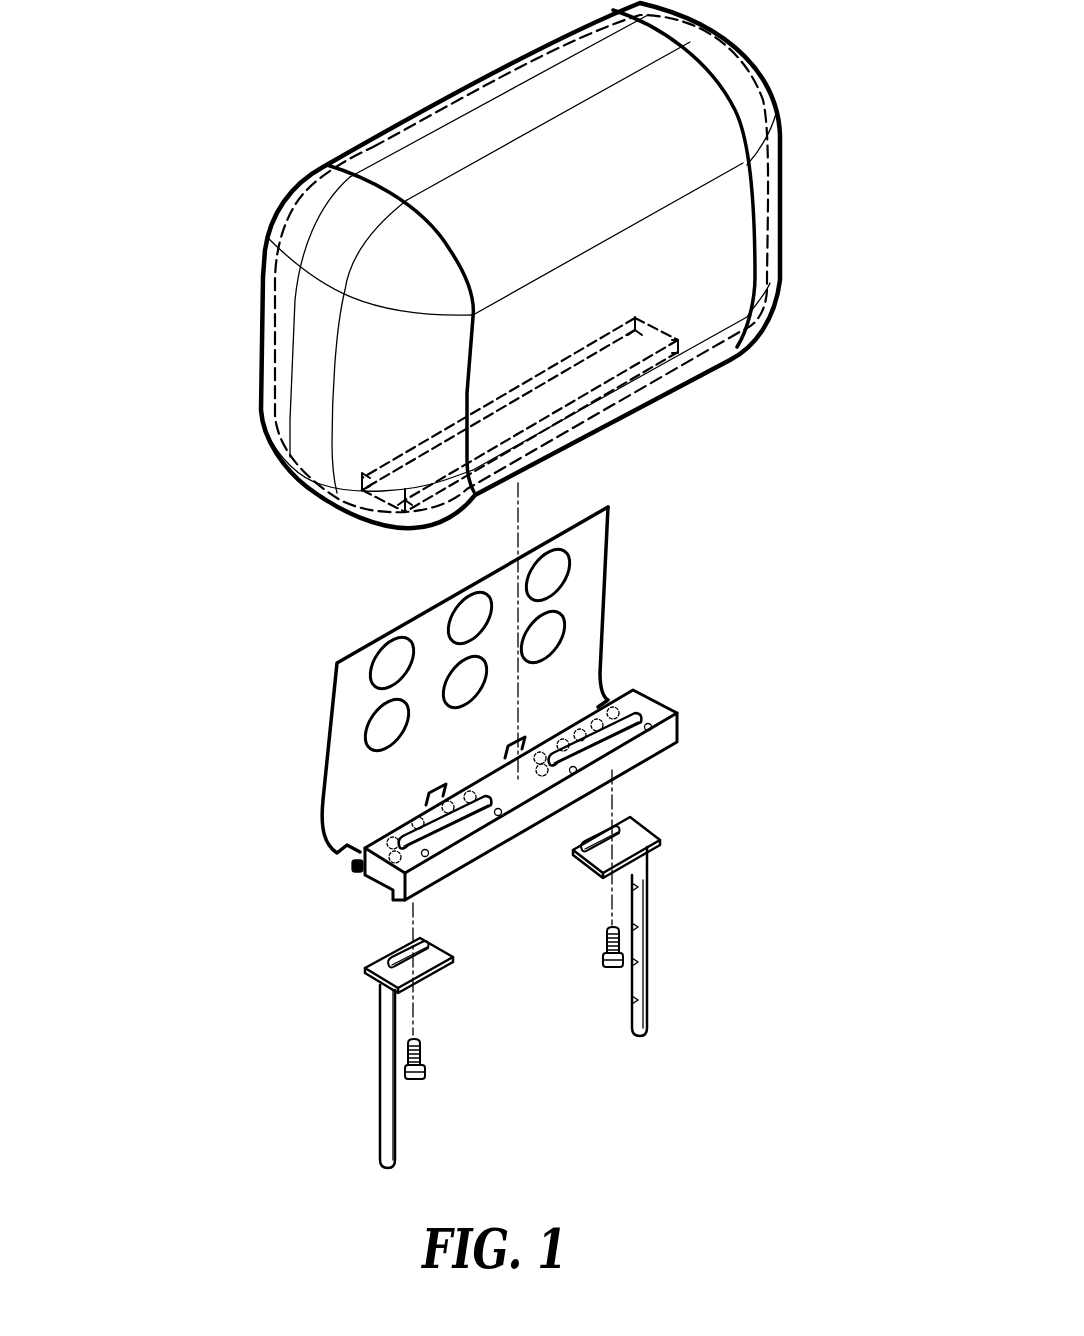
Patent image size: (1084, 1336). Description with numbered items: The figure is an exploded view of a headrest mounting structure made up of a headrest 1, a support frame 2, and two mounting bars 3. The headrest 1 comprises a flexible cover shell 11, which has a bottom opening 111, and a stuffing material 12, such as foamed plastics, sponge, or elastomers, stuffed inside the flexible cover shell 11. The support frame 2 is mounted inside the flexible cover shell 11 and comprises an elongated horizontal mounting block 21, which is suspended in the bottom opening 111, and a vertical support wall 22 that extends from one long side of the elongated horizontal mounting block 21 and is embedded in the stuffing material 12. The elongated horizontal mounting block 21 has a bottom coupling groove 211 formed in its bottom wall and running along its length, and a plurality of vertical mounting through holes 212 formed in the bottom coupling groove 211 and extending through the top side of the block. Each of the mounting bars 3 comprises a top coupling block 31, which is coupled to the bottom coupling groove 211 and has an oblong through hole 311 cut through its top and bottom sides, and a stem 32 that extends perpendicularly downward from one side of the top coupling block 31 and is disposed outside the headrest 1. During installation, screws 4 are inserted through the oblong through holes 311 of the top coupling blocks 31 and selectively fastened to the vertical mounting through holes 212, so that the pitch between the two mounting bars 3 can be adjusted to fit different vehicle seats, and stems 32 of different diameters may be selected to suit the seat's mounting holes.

The headrest 1 is at (504, 295).
The flexible cover shell 11 is at (258, 322).
The stuffing material 12 is at (682, 103).
The bottom opening 111 is at (395, 493).
The support frame 2 is at (450, 837).
The elongated horizontal mounting block 21 is at (455, 858).
The bottom coupling groove 211 is at (388, 883).
The vertical mounting through holes 212 is at (363, 868).
The vertical support wall 22 is at (577, 660).
The mounting bars 3 is at (655, 919).
The top coupling block 31 is at (625, 853).
The oblong through hole 311 is at (580, 853).
The stem 32 is at (642, 943).
The screws 4 is at (607, 966).